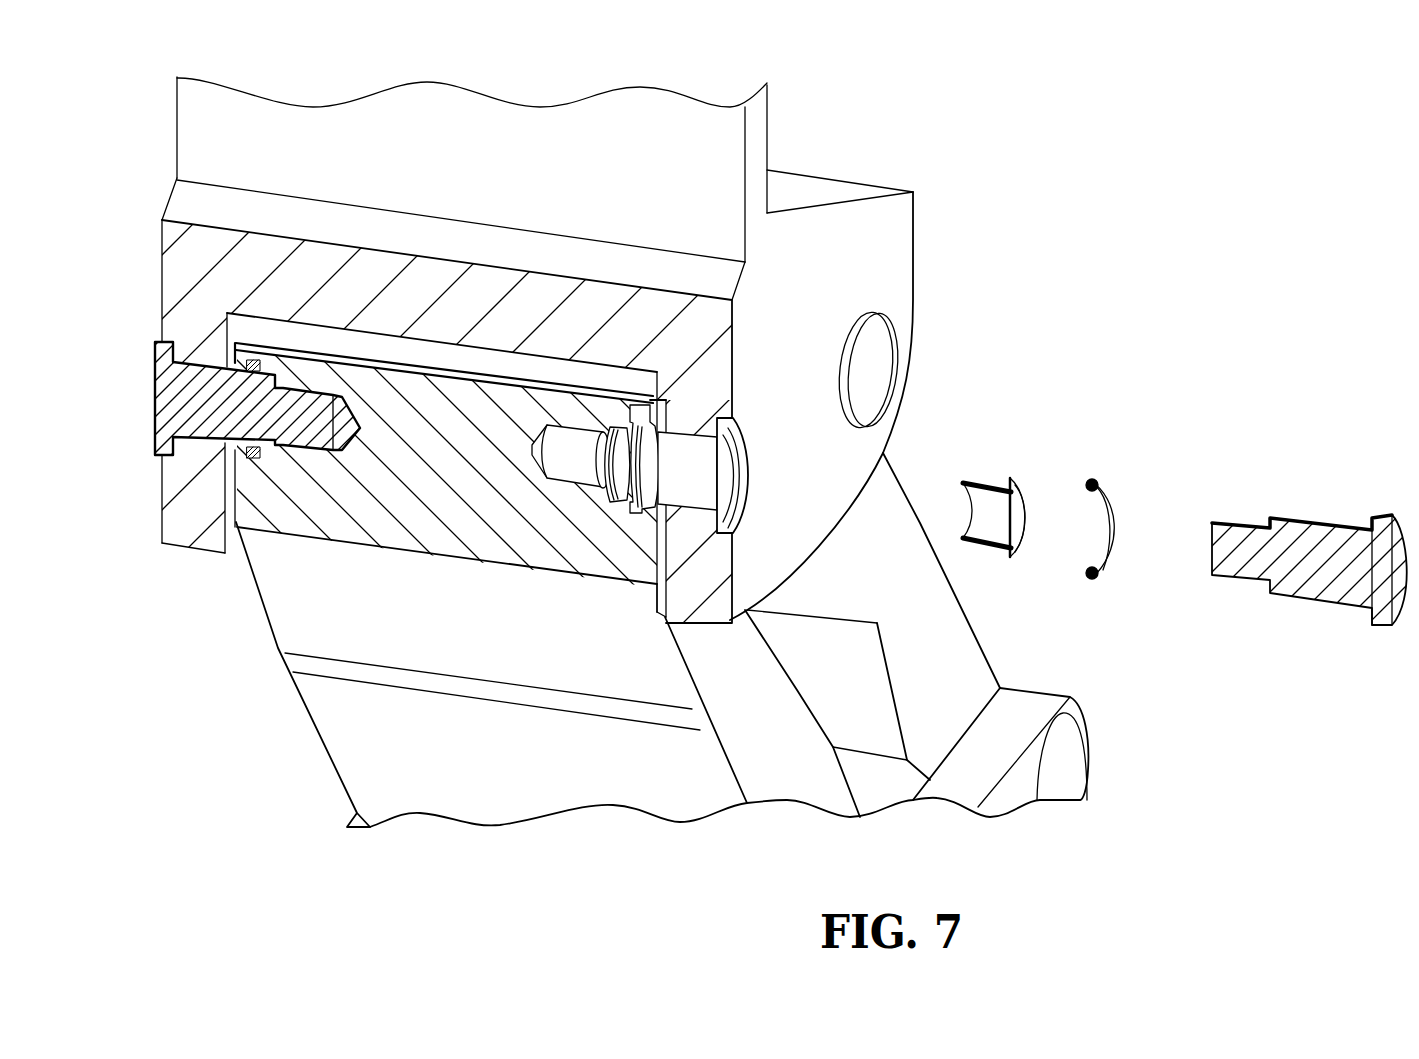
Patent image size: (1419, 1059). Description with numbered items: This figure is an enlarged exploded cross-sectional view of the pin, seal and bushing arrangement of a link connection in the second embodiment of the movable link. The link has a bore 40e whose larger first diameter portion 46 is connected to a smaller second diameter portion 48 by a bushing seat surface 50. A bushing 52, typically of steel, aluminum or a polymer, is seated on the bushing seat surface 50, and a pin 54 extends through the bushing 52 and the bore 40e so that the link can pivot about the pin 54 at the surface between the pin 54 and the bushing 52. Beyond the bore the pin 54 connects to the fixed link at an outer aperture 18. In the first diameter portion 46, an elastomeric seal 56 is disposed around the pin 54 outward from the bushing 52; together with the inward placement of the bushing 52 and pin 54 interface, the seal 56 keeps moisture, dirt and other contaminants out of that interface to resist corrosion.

The bore 40e is at (526, 421).
The second diameter portion 48 is at (580, 453).
The bushing seat surface 50 is at (603, 425).
The first diameter portion 46 is at (633, 447).
The outer aperture 18 is at (760, 448).
The bushing 52 is at (984, 550).
The seal 56 is at (1100, 578).
The pin 54 is at (1332, 608).